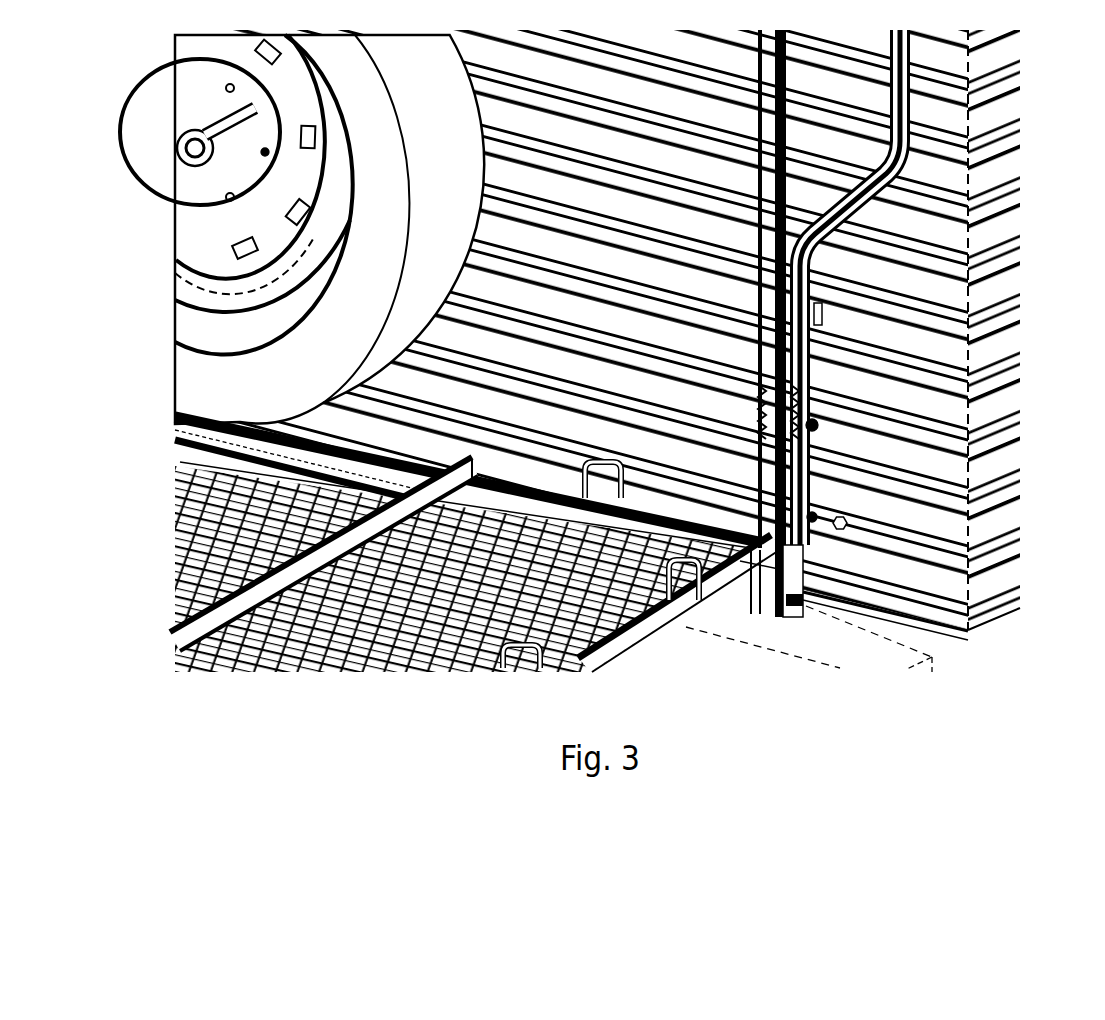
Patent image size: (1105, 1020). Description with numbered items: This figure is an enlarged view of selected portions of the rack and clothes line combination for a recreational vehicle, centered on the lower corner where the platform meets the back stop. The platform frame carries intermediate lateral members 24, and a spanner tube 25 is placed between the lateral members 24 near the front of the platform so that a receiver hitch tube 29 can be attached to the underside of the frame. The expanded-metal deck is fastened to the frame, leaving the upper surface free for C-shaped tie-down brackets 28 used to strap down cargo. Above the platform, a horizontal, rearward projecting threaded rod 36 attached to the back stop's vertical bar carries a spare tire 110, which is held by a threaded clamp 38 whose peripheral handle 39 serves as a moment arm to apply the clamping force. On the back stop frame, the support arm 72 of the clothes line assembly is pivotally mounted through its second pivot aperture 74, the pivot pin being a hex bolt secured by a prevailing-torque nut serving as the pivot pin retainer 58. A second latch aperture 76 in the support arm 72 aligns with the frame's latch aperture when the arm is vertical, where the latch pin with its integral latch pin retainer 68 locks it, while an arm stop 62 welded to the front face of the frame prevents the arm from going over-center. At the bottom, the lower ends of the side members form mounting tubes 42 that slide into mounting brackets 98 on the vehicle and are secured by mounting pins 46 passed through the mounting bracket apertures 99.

The lateral member 24 is at (185, 630).
The spanner tube 25 is at (190, 457).
The tie-down bracket 28 is at (677, 600).
The receiver hitch tube 29 is at (185, 487).
The threaded rod 36 is at (183, 133).
The threaded clamp 38 is at (183, 152).
The handle 39 is at (185, 95).
The mounting tube 42 is at (967, 604).
The mounting pin 46 is at (975, 628).
The pivot pin retainer 58 is at (845, 523).
The arm stop 62 is at (820, 307).
The latch pin retainer 68 is at (820, 432).
The support arm 72 is at (812, 325).
The second pivot aperture 74 is at (812, 517).
The second latch aperture 76 is at (814, 420).
The mounting bracket 98 is at (843, 603).
The mounting bracket aperture 99 is at (803, 600).
The spare tire 110 is at (183, 186).